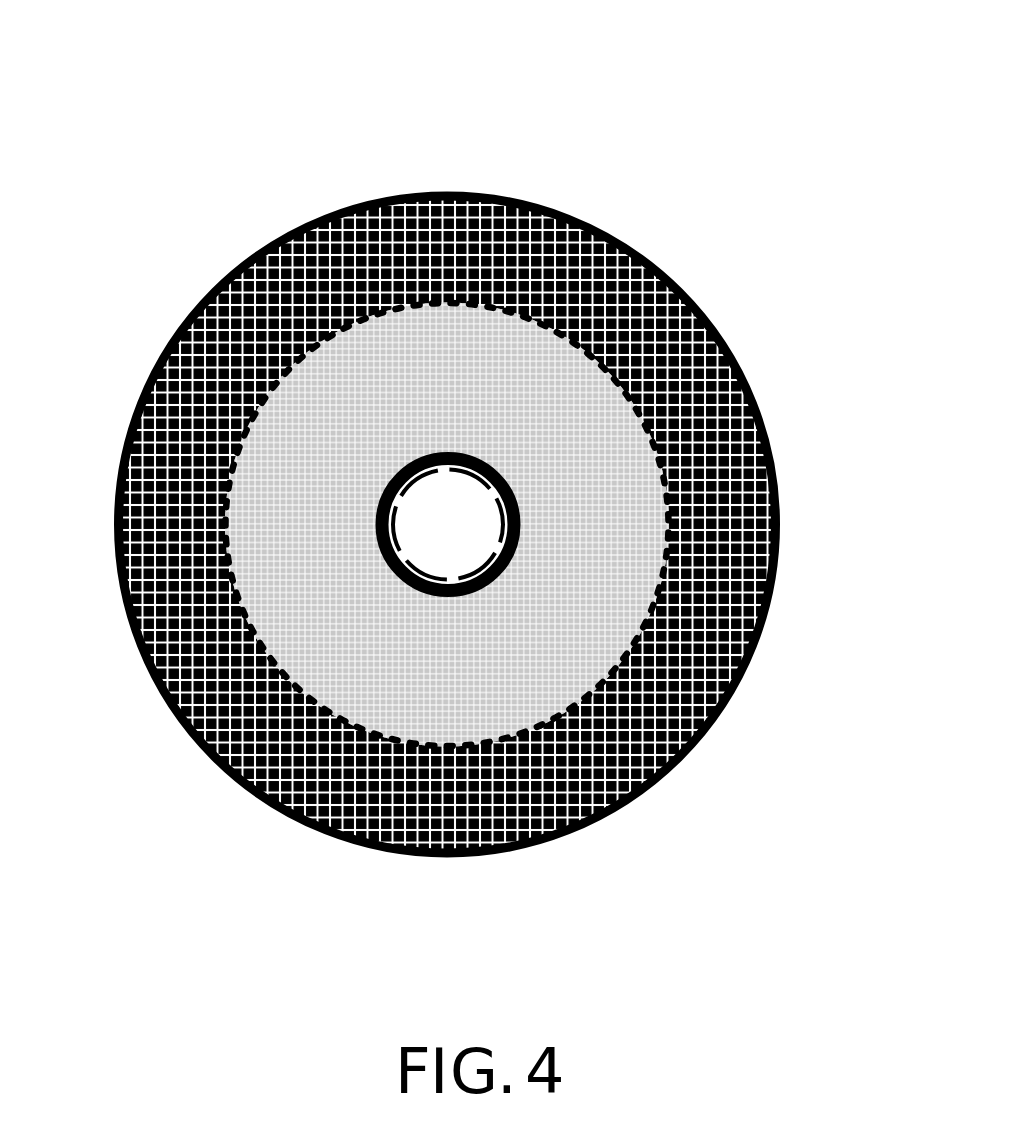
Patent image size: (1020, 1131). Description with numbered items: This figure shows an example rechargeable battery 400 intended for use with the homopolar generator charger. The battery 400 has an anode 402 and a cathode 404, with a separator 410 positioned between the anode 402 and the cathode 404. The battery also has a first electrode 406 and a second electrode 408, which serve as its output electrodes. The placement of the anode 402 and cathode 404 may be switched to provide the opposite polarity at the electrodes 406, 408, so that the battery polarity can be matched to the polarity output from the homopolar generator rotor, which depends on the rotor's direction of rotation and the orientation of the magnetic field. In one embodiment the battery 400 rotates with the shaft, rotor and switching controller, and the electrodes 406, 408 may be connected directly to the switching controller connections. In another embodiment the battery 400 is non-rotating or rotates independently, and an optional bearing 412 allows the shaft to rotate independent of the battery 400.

The rechargeable battery 400 is at (407, 80).
The anode 402 is at (345, 802).
The cathode 404 is at (480, 368).
The first electrode 406 is at (398, 577).
The second electrode 408 is at (558, 207).
The separator 410 is at (225, 532).
The bearing 412 is at (442, 478).